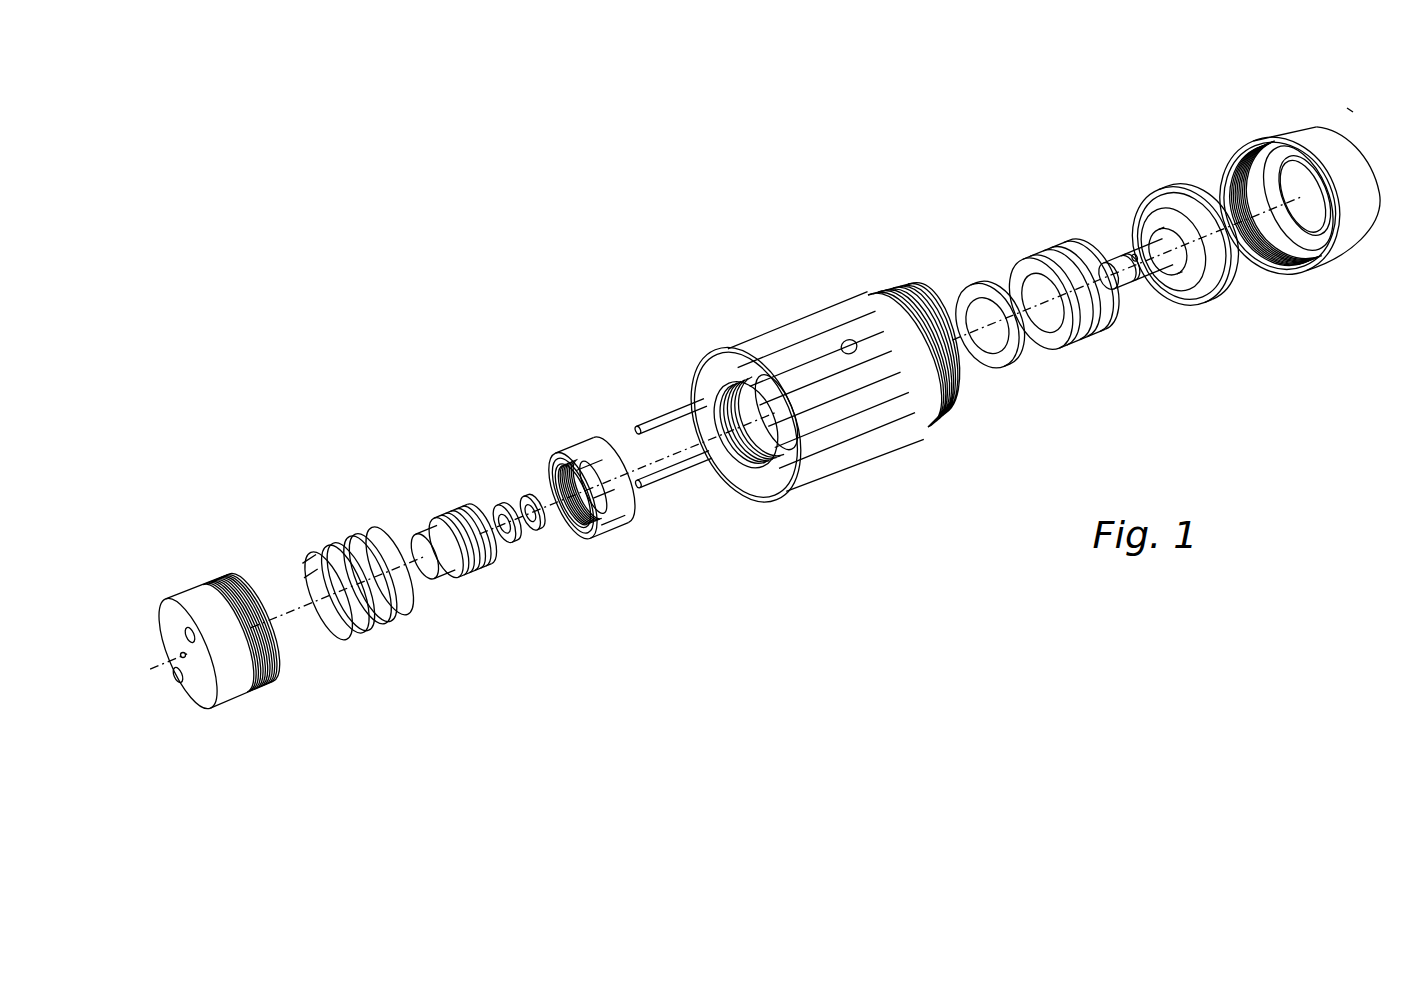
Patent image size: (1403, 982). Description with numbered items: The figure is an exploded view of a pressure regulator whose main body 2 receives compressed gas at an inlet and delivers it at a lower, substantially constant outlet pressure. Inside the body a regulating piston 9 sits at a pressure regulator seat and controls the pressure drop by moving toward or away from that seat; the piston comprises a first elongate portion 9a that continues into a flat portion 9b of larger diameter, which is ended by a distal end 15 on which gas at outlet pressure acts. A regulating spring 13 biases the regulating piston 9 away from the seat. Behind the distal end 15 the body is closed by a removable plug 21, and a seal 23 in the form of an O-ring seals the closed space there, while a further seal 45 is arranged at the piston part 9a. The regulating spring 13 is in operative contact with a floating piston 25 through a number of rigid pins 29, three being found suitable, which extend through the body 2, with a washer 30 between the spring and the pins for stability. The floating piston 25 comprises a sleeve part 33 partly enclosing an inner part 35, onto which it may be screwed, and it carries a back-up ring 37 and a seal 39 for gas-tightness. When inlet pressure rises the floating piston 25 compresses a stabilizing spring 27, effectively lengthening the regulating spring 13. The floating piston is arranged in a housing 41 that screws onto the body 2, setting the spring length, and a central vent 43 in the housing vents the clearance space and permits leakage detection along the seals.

The body 2 is at (762, 340).
The regulating piston 9 is at (1127, 250).
The first elongate portion 9a is at (1142, 280).
The flat portion 9b is at (1155, 205).
The regulating spring 13 is at (1053, 252).
The distal end 15 is at (1237, 277).
The removable plug 21 is at (1315, 138).
The seal 23 is at (1197, 187).
The floating piston 25 is at (638, 519).
The stabilizing spring 27 is at (358, 542).
The rigid pins 29 is at (660, 420).
The washer 30 is at (980, 280).
The sleeve part 33 is at (598, 447).
The inner part 35 is at (445, 512).
The back-up ring 37 is at (523, 495).
The seal 39 is at (497, 500).
The housing 41 is at (187, 600).
The central vent 43 is at (181, 654).
The seal 45 is at (1195, 303).